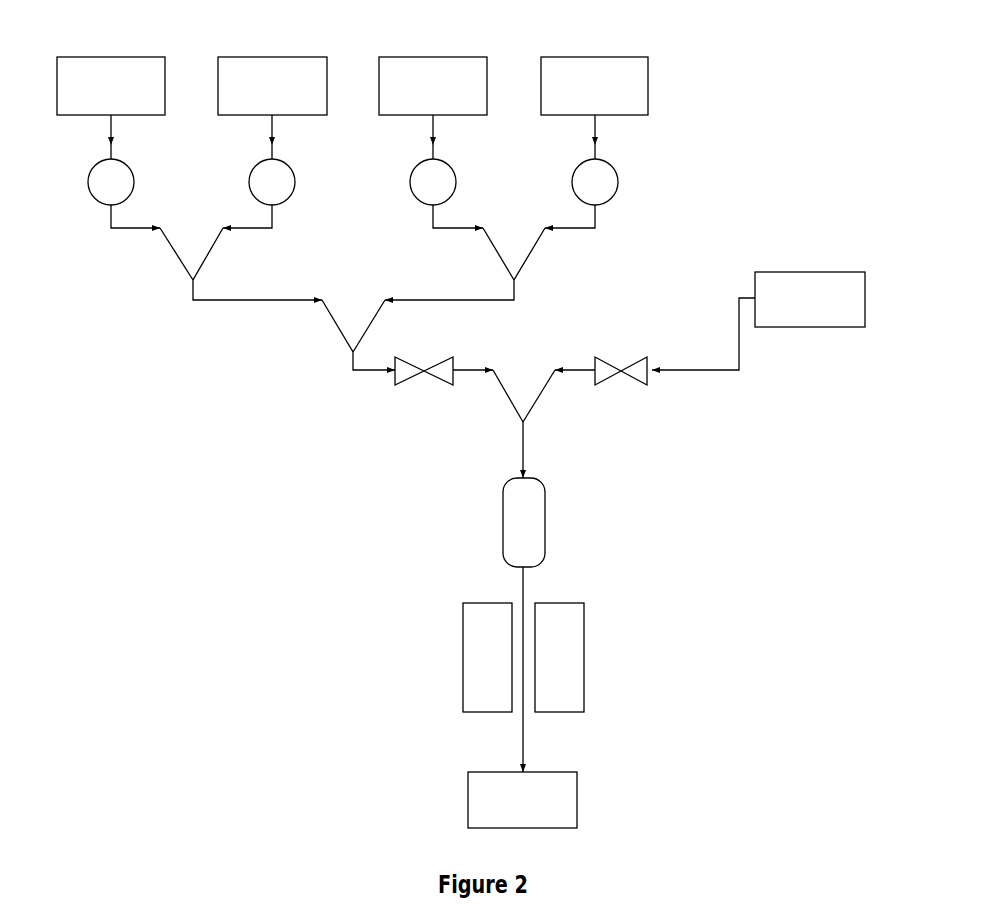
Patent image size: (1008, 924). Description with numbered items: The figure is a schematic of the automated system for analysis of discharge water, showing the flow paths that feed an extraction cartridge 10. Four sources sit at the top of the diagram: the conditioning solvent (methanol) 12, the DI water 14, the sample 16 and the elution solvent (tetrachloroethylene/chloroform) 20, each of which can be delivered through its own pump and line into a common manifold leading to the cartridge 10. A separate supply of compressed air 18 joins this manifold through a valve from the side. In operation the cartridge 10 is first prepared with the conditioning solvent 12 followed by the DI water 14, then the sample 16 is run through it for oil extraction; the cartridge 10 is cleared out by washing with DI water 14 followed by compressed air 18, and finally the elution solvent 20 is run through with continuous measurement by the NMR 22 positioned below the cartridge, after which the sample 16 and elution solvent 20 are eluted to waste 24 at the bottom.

The cartridge 10 is at (545, 518).
The conditioning solvent (methanol) 12 is at (272, 57).
The DI water 14 is at (111, 57).
The sample 16 is at (433, 57).
The compressed air 18 is at (775, 272).
The elution solvent (tetrachloroethylene/chloroform) 20 is at (595, 57).
The NMR 22 is at (584, 640).
The waste 24 is at (577, 800).